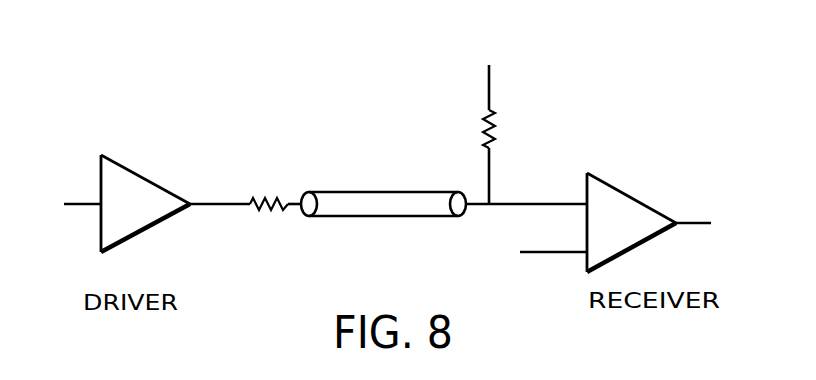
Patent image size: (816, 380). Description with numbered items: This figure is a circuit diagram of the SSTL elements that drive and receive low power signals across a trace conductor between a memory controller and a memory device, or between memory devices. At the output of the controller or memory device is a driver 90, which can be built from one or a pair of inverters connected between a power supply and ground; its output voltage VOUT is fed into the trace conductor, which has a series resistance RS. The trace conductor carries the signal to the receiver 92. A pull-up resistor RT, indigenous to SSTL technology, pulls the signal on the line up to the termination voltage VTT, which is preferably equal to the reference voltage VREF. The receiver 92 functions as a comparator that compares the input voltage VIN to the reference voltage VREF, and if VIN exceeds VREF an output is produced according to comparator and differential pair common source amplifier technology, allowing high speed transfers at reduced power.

The driver 90 is at (141, 176).
The receiver 92 is at (625, 193).
The series resistance RS is at (275, 182).
The pull-up resistor RT is at (506, 157).
The termination voltage VTT is at (497, 68).
The input voltage VIN is at (526, 185).
The output voltage VOUT is at (220, 227).
The reference voltage VREF is at (551, 271).